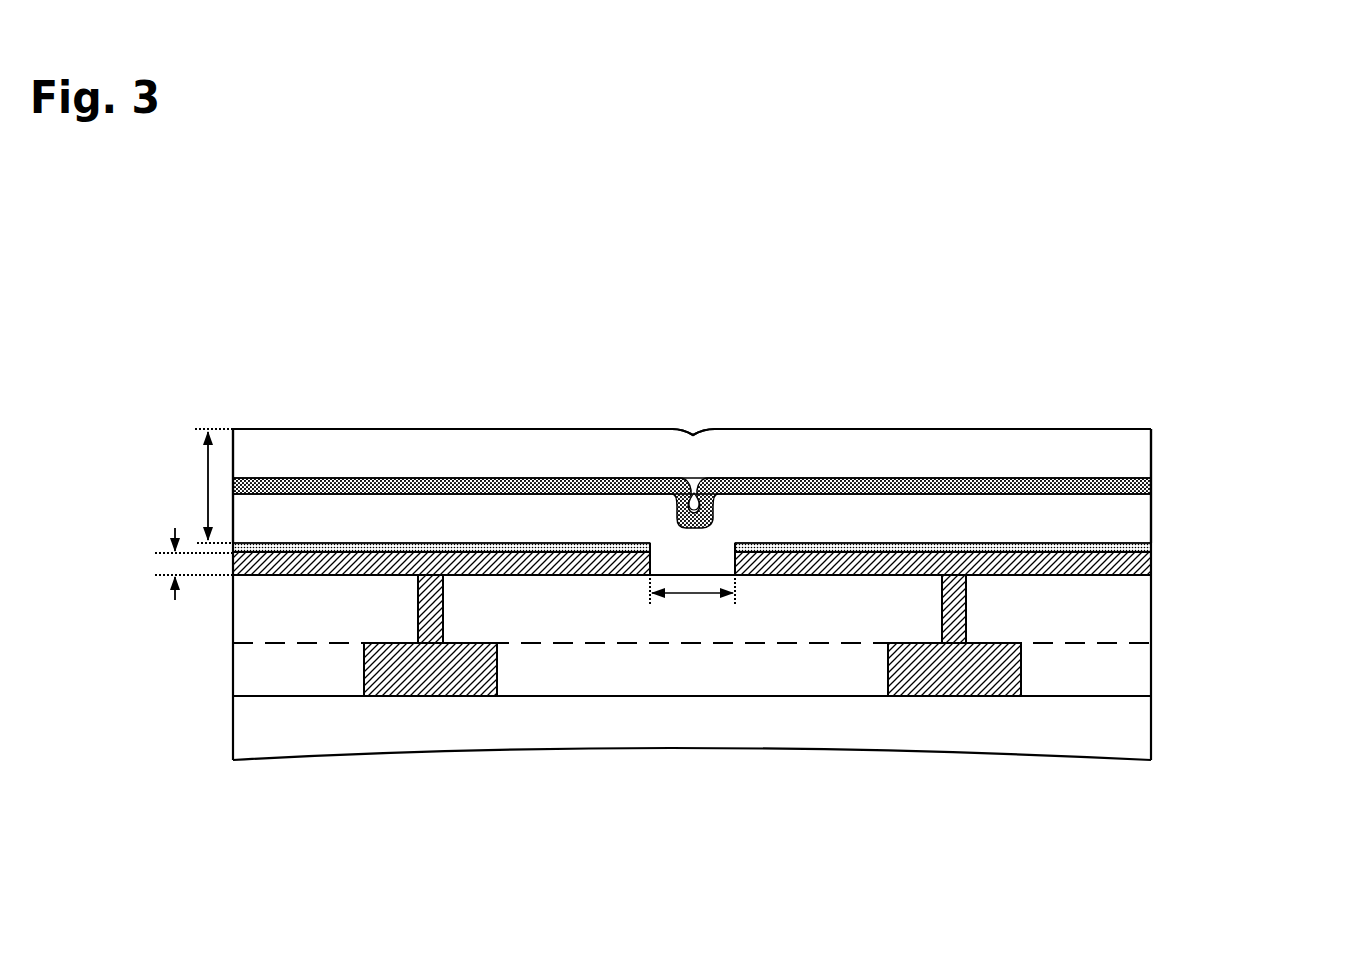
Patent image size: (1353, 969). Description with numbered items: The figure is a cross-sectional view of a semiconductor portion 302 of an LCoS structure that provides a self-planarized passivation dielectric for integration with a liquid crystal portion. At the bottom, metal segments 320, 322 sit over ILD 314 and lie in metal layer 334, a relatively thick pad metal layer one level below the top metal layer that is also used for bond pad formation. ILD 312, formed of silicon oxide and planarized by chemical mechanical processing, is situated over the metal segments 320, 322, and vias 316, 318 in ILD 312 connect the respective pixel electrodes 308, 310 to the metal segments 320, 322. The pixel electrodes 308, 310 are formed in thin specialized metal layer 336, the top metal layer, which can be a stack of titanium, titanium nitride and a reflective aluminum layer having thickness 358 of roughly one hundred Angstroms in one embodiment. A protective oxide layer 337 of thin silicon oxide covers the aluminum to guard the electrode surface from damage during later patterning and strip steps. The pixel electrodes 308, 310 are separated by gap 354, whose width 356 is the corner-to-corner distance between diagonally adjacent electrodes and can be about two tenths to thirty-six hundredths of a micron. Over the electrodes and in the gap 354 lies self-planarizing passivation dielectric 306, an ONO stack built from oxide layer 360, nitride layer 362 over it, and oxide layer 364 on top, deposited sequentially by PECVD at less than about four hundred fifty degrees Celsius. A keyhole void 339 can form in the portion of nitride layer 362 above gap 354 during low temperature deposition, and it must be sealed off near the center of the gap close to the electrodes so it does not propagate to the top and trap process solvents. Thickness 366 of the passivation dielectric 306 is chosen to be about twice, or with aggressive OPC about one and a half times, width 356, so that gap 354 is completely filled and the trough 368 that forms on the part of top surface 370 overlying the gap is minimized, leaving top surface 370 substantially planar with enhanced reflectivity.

The semiconductor portion 302 is at (1262, 180).
The self-planarizing passivation dielectric 306 is at (1160, 541).
The pixel electrode 308 is at (353, 572).
The pixel electrode 310 is at (885, 572).
The ILD 312 is at (1155, 611).
The ILD 314 is at (1130, 733).
The via 316 is at (443, 608).
The via 318 is at (967, 608).
The metal segment 320 is at (437, 696).
The metal segment 322 is at (965, 696).
The metal layer 334 is at (1155, 669).
The thin specialized metal layer 336 is at (1155, 564).
The protective oxide layer 337 is at (300, 548).
The keyhole void 339 is at (677, 506).
The gap 354 is at (707, 558).
The width 356 is at (706, 598).
The thickness 358 is at (175, 594).
The oxide layer 360 is at (465, 522).
The nitride layer 362 is at (394, 490).
The oxide layer 364 is at (312, 455).
The thickness 366 is at (207, 463).
The trough 368 is at (693, 424).
The top surface 370 is at (808, 426).